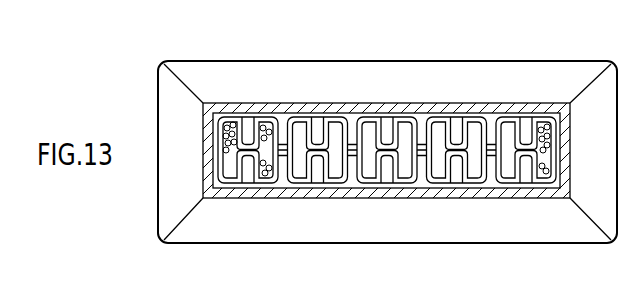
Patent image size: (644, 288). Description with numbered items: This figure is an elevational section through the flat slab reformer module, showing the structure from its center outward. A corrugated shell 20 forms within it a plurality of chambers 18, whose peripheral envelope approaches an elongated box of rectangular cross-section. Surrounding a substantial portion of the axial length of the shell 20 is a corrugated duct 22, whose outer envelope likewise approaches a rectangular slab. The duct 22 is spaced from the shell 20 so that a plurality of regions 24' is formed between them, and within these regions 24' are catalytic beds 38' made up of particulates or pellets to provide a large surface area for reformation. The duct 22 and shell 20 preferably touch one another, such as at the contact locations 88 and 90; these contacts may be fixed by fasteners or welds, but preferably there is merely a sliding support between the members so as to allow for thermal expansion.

The chambers 18 is at (247, 158).
The corrugated shell 20 is at (301, 176).
The corrugated duct 22 is at (216, 171).
The regions 24' is at (410, 130).
The catalytic beds 38' is at (278, 178).
The contact location 88 is at (237, 138).
The contact location 90 is at (351, 144).